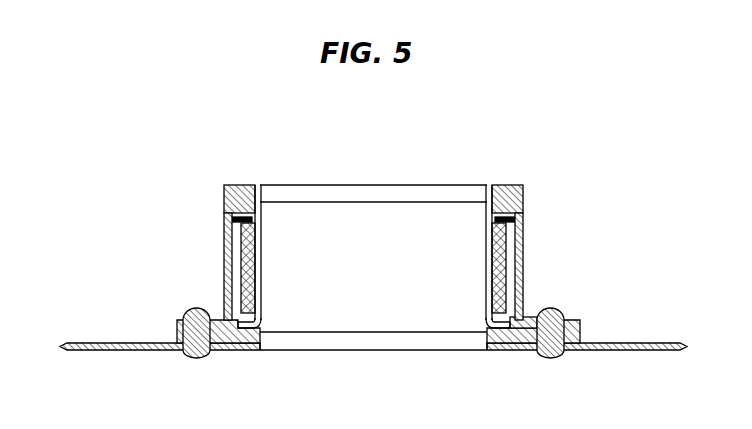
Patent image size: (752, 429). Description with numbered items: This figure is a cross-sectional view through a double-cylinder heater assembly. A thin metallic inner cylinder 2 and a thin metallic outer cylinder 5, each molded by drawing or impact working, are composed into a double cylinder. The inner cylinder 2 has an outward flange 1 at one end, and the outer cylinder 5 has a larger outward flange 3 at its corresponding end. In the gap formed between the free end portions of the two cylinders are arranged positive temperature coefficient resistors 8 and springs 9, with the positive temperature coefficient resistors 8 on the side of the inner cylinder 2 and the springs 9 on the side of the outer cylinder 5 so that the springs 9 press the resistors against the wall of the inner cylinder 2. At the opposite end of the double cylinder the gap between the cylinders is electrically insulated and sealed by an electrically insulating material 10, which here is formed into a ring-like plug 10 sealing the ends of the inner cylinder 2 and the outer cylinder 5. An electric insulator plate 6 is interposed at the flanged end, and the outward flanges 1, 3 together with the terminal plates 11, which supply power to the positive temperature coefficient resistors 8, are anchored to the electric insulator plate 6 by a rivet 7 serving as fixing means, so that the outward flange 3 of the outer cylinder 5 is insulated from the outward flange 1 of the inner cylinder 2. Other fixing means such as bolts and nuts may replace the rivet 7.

The outward flange 1 is at (538, 320).
The inner cylinder 2 is at (261, 227).
The outward flange 3 is at (222, 316).
The outer cylinder 5 is at (233, 238).
The electric insulator plate 6 is at (249, 352).
The rivet 7 is at (199, 359).
The positive temperature coefficient resistors 8 is at (262, 250).
The springs 9 is at (246, 266).
The electrically insulating material 10 is at (515, 188).
The terminals 11 is at (112, 352).